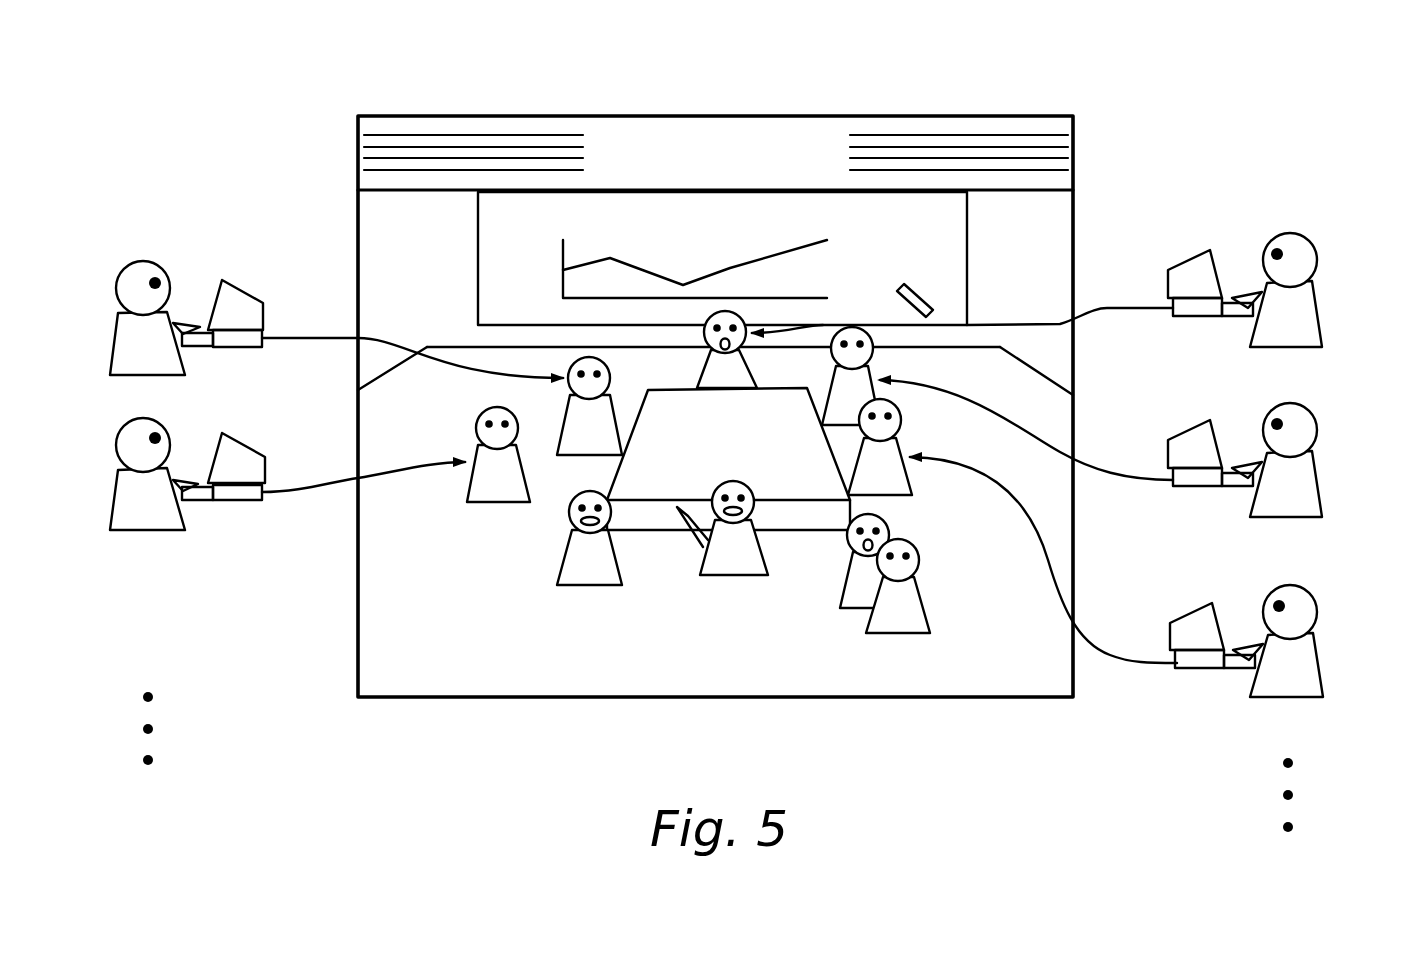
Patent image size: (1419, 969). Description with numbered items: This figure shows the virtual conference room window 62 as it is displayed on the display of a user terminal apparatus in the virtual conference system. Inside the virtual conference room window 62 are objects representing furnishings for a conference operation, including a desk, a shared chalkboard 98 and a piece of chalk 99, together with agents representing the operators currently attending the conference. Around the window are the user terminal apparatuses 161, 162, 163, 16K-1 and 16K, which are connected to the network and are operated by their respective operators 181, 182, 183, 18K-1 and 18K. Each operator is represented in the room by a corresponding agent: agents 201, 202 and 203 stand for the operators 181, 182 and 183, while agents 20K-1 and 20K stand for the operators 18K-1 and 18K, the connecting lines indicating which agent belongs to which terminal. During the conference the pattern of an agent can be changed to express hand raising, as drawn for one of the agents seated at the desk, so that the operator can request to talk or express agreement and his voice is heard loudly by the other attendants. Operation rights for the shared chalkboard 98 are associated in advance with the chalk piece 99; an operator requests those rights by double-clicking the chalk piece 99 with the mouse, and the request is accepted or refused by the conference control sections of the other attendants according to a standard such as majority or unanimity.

The virtual conference room window 62 is at (683, 116).
The shared chalkboard 98 is at (478, 288).
The piece of chalk 99 is at (942, 233).
The agent 20K is at (570, 412).
The agent 20K-1 is at (496, 505).
The agent 201 is at (718, 386).
The agent 202 is at (878, 352).
The agent 203 is at (904, 498).
The user terminal apparatus 16K is at (238, 279).
The user terminal apparatus 16K-1 is at (247, 500).
The user terminal apparatus 161 is at (1205, 249).
The user terminal apparatus 162 is at (1196, 433).
The user terminal apparatus 163 is at (1203, 613).
The operator 18K is at (160, 259).
The operator 18K-1 is at (125, 533).
The operator 181 is at (1314, 243).
The operator 182 is at (1316, 418).
The operator 183 is at (1314, 600).